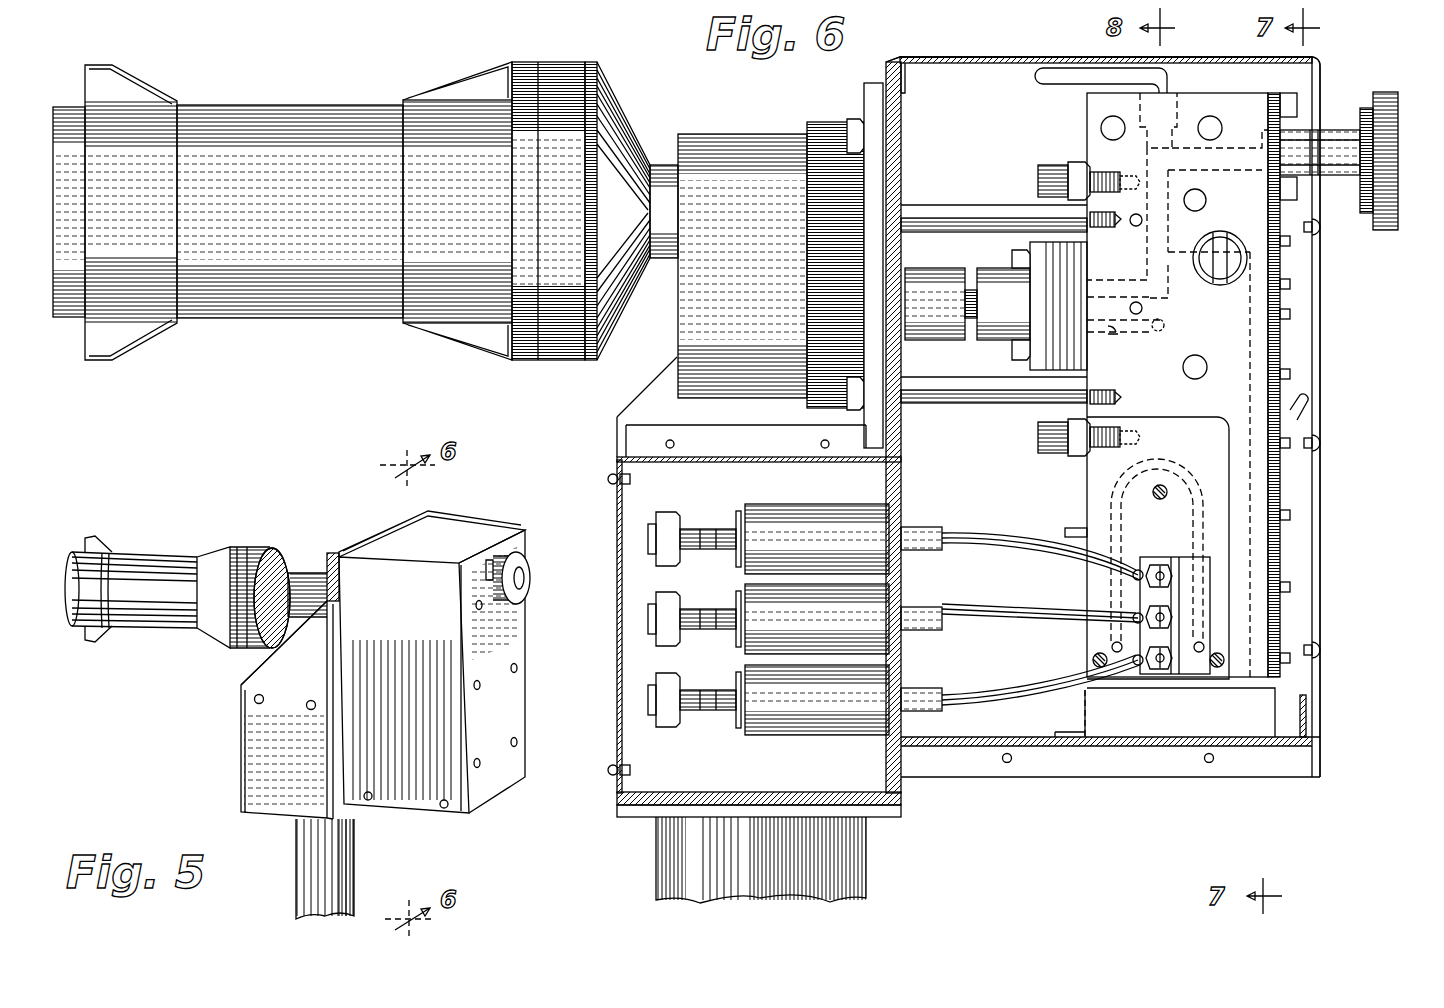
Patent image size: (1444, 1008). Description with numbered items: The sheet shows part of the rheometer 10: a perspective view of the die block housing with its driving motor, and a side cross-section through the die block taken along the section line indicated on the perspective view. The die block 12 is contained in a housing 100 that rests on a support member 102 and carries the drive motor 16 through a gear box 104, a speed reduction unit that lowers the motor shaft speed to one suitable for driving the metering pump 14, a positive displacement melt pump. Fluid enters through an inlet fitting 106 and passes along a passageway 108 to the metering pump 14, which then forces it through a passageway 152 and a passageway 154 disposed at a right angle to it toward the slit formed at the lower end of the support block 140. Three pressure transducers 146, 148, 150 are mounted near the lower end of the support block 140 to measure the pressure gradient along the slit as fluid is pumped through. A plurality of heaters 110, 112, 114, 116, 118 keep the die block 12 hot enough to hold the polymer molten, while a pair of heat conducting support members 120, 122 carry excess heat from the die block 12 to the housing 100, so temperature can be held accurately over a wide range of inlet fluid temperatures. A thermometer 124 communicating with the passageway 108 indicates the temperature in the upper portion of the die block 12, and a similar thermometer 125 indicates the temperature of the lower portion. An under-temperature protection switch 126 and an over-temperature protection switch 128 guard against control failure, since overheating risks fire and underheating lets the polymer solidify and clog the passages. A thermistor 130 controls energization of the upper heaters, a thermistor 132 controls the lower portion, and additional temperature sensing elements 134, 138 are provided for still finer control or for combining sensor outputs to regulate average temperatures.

In FIG. 6, the rheometer 10 is at (640, 58).
In FIG. 5, the rheometer 10 is at (195, 716).
In FIG. 6, the die block 12 is at (1072, 478).
In FIG. 6, the metering pump 14 is at (1030, 325).
In FIG. 6, the drive motor 16 is at (326, 106).
In FIG. 5, the drive motor 16 is at (180, 556).
In FIG. 6, the housing 100 is at (1039, 58).
In FIG. 5, the housing 100 is at (470, 527).
In FIG. 6, the support member 102 is at (866, 894).
In FIG. 5, the support member 102 is at (296, 880).
In FIG. 6, the gear box 104 is at (760, 120).
In FIG. 5, the gear box 104 is at (316, 564).
In FIG. 6, the inlet fitting 106 is at (1390, 92).
In FIG. 5, the inlet fitting 106 is at (525, 566).
In FIG. 6, the passageway 108 is at (1165, 222).
In FIG. 6, the heater 110 is at (1104, 124).
In FIG. 6, the heater 112 is at (1214, 117).
In FIG. 6, the heater 114 is at (1202, 193).
In FIG. 6, the heater 116 is at (1192, 379).
In FIG. 6, the heater 118 is at (1185, 472).
In FIG. 6, the support member 120 is at (940, 212).
In FIG. 6, the support member 122 is at (918, 402).
In FIG. 6, the thermometer 124 is at (1035, 78).
In FIG. 6, the thermometer 125 is at (1300, 405).
In FIG. 6, the under-temperature protection switch 126 is at (1038, 182).
In FIG. 6, the over-temperature protection switch 128 is at (1038, 438).
In FIG. 6, the thermistor 130 is at (1142, 308).
In FIG. 6, the thermistor 132 is at (1075, 640).
In FIG. 6, the temperature sensing element 134 is at (1133, 227).
In FIG. 6, the temperature sensing element 138 is at (1074, 528).
In FIG. 6, the support block 140 is at (1240, 362).
In FIG. 6, the pressure transducer 146 is at (1010, 550).
In FIG. 6, the pressure transducer 148 is at (1010, 626).
In FIG. 6, the pressure transducer 150 is at (1008, 704).
In FIG. 6, the passageway 152 is at (1113, 332).
In FIG. 6, the passageway 154 is at (1166, 330).